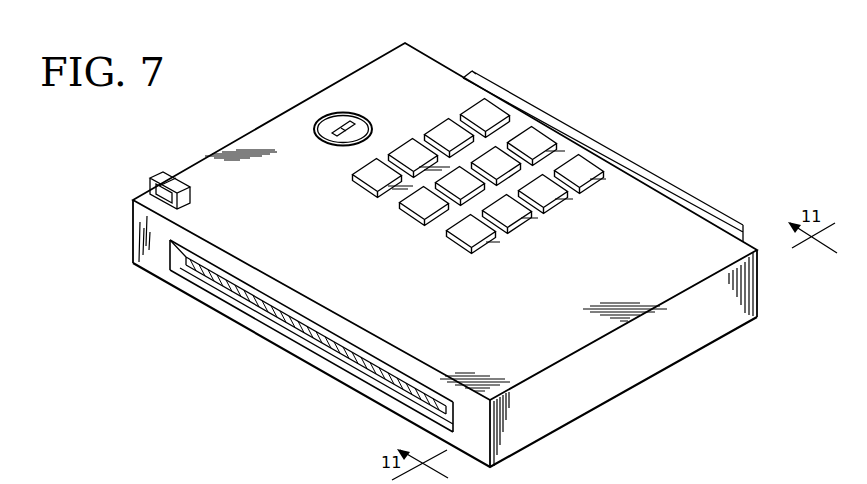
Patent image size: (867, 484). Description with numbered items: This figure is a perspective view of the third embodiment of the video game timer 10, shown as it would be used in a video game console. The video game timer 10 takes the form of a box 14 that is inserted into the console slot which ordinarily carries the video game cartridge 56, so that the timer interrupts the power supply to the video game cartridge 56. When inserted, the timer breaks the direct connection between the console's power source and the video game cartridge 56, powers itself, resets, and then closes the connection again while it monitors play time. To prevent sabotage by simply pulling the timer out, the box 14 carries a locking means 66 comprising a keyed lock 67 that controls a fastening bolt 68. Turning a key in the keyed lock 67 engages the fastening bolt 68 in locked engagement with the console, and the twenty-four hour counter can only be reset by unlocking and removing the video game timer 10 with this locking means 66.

The video game timer 10 is at (339, 62).
The box 14 is at (263, 124).
The video game cartridge 56 is at (733, 222).
The locking means 66 is at (339, 116).
The keyed lock 67 is at (333, 138).
The fastening bolt 68 is at (150, 183).